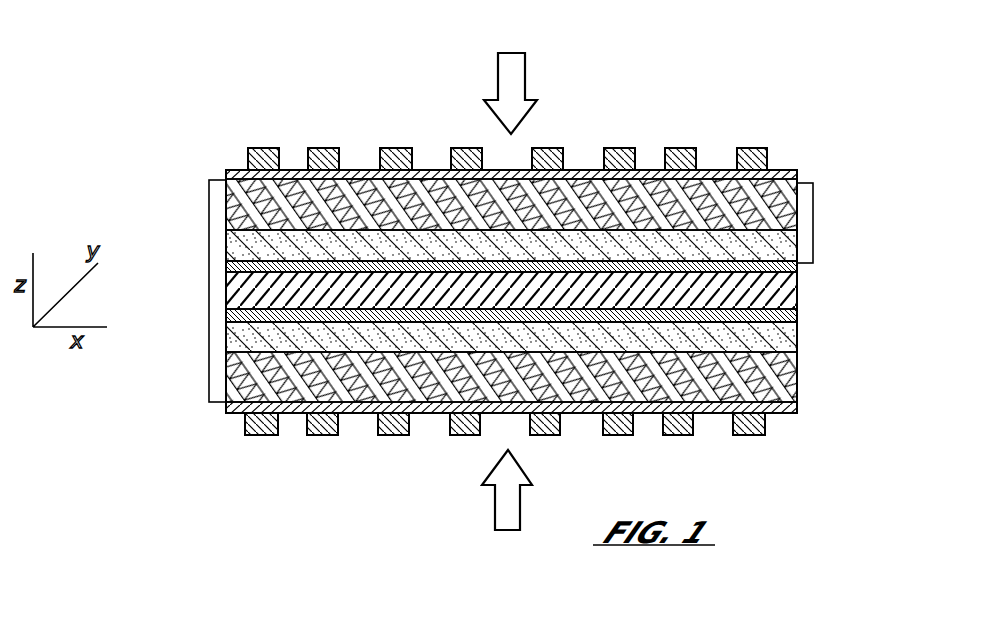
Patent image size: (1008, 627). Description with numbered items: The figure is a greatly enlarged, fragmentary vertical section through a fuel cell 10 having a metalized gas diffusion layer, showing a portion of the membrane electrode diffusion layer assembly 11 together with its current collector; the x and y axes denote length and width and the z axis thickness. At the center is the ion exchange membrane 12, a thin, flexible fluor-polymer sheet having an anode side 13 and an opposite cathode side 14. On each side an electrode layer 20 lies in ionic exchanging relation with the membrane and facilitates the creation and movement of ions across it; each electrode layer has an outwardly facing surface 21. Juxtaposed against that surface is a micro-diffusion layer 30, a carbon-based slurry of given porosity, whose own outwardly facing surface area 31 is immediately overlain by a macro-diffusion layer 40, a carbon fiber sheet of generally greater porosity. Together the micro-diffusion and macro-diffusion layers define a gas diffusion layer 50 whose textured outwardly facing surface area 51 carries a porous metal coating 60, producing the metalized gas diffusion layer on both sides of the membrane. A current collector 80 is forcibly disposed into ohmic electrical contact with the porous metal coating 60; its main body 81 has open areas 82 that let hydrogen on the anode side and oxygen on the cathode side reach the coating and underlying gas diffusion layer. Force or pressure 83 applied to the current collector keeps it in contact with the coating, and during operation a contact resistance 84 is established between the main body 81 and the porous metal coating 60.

The fuel cell 10 is at (722, 52).
The membrane electrode diffusion layer assembly 11 is at (209, 373).
The ion exchange membrane 12 is at (780, 292).
The anode side 13 is at (795, 262).
The cathode side 14 is at (790, 319).
The electrode layer 20 is at (226, 266).
The outwardly facing surface 21 is at (226, 254).
The micro-diffusion layer 30 is at (226, 242).
The outwardly facing surface area 31 is at (302, 223).
The macro-diffusion layer 40 is at (787, 200).
The gas diffusion layer 50 is at (815, 232).
The outwardly facing surface area 51 is at (708, 170).
The porous metal coating 60 is at (777, 180).
The current collector 80 is at (622, 148).
The main body 81 is at (268, 148).
The open areas 82 is at (339, 158).
The force or pressure 83 is at (527, 75).
The contact resistance 84 is at (412, 168).